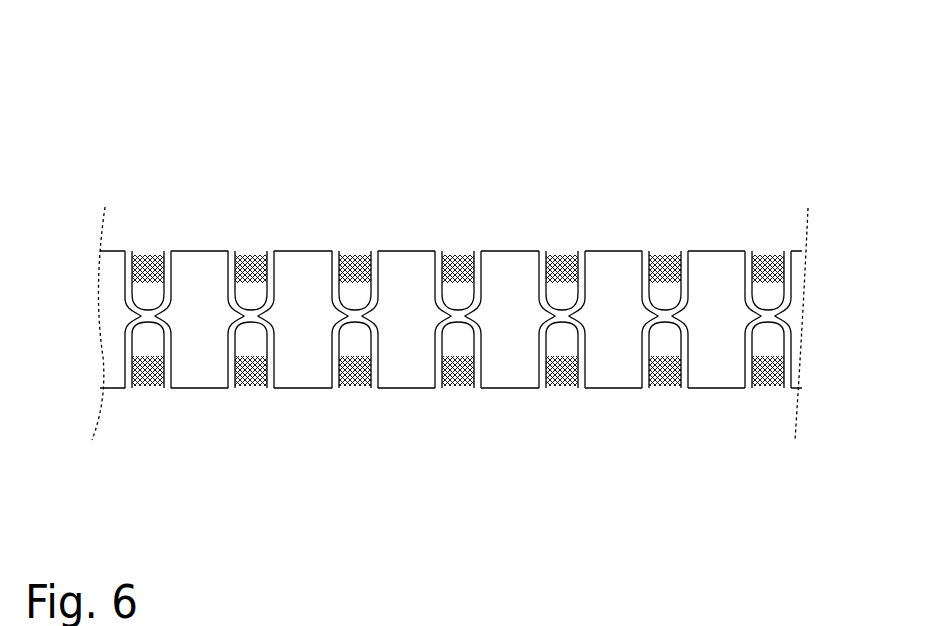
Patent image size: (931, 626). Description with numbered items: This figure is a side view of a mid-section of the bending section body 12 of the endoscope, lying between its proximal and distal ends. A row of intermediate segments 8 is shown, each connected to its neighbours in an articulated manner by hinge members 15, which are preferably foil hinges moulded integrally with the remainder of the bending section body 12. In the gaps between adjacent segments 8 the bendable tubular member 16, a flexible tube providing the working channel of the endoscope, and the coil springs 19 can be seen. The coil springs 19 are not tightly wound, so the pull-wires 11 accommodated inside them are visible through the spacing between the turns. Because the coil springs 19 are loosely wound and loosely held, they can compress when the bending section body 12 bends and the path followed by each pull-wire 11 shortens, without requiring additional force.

The bending section body 12 is at (638, 183).
The intermediate segment 8 is at (305, 252).
The bendable tubular member 16 is at (149, 295).
The coil spring 19 is at (257, 265).
The pull-wire 11 is at (560, 268).
The hinge member 15 is at (350, 315).